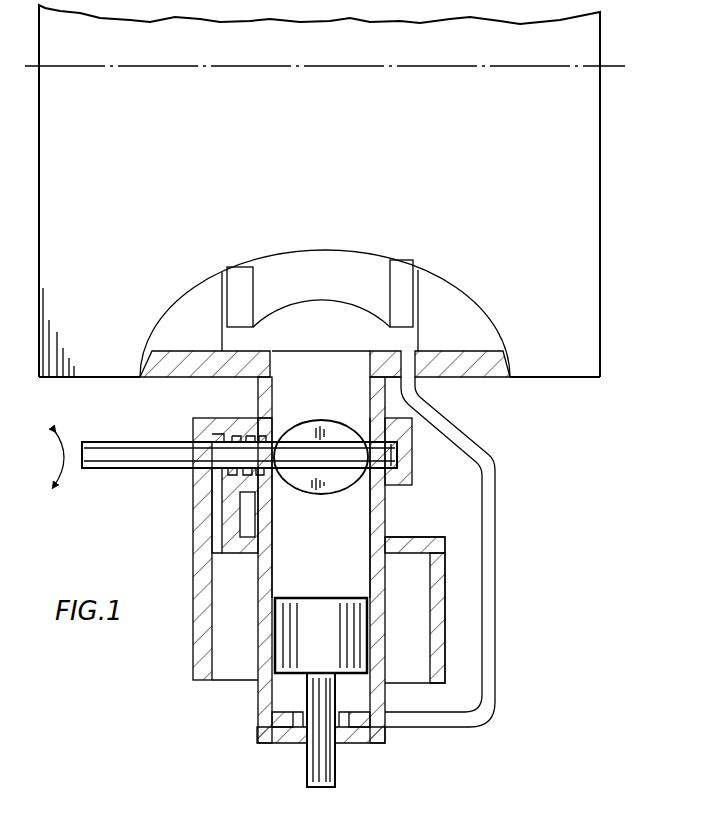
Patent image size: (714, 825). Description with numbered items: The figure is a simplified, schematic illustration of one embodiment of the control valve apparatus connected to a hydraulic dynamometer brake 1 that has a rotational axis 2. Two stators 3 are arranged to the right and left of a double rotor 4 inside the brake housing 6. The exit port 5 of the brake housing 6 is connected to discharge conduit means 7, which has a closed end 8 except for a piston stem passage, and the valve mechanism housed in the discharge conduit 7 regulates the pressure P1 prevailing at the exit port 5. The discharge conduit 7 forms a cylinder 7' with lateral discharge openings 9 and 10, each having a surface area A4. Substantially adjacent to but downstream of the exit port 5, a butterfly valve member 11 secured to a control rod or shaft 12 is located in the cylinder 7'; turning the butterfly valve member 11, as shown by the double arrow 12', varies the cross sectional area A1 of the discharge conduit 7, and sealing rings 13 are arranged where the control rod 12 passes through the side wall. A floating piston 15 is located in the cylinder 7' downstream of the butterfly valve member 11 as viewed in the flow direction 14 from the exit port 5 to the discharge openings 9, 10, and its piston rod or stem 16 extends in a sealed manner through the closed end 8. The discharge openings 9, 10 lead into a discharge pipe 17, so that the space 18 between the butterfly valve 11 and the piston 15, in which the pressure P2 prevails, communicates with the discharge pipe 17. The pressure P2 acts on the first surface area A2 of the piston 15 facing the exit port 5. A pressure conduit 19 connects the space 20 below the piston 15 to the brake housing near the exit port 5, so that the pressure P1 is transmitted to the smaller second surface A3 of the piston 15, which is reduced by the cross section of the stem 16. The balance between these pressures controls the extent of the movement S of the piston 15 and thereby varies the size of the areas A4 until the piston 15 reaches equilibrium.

The hydraulic dynamometer brake 1 is at (603, 160).
The rotational axis 2 is at (609, 66).
The stators 3 is at (205, 305).
The double rotor 4 is at (330, 262).
The exit port 5 is at (364, 358).
The brake housing 6 is at (178, 380).
The discharge conduit means 7 is at (243, 397).
The cylinder 7' is at (393, 560).
The closed end 8 is at (282, 745).
The lateral discharge opening 9 is at (384, 595).
The lateral discharge opening 10 is at (262, 582).
The butterfly valve member 11 is at (322, 420).
The control rod or shaft 12 is at (239, 436).
The double arrow 12' is at (35, 458).
The sealing rings 13 is at (235, 478).
The flow direction 14 is at (328, 363).
The floating piston 15 is at (321, 645).
The piston rod or stem 16 is at (308, 782).
The discharge pipe 17 is at (218, 680).
The space 18 is at (303, 523).
The pressure conduit 19 is at (497, 652).
The space below the piston 20 is at (364, 725).
The cross sectional area A1 is at (287, 416).
The first surface area A2 is at (318, 598).
The second surface A3 is at (289, 690).
The surface area A4 is at (258, 615).
The pressure P1 is at (333, 512).
The pressure P2 is at (318, 535).
The movement S is at (361, 636).